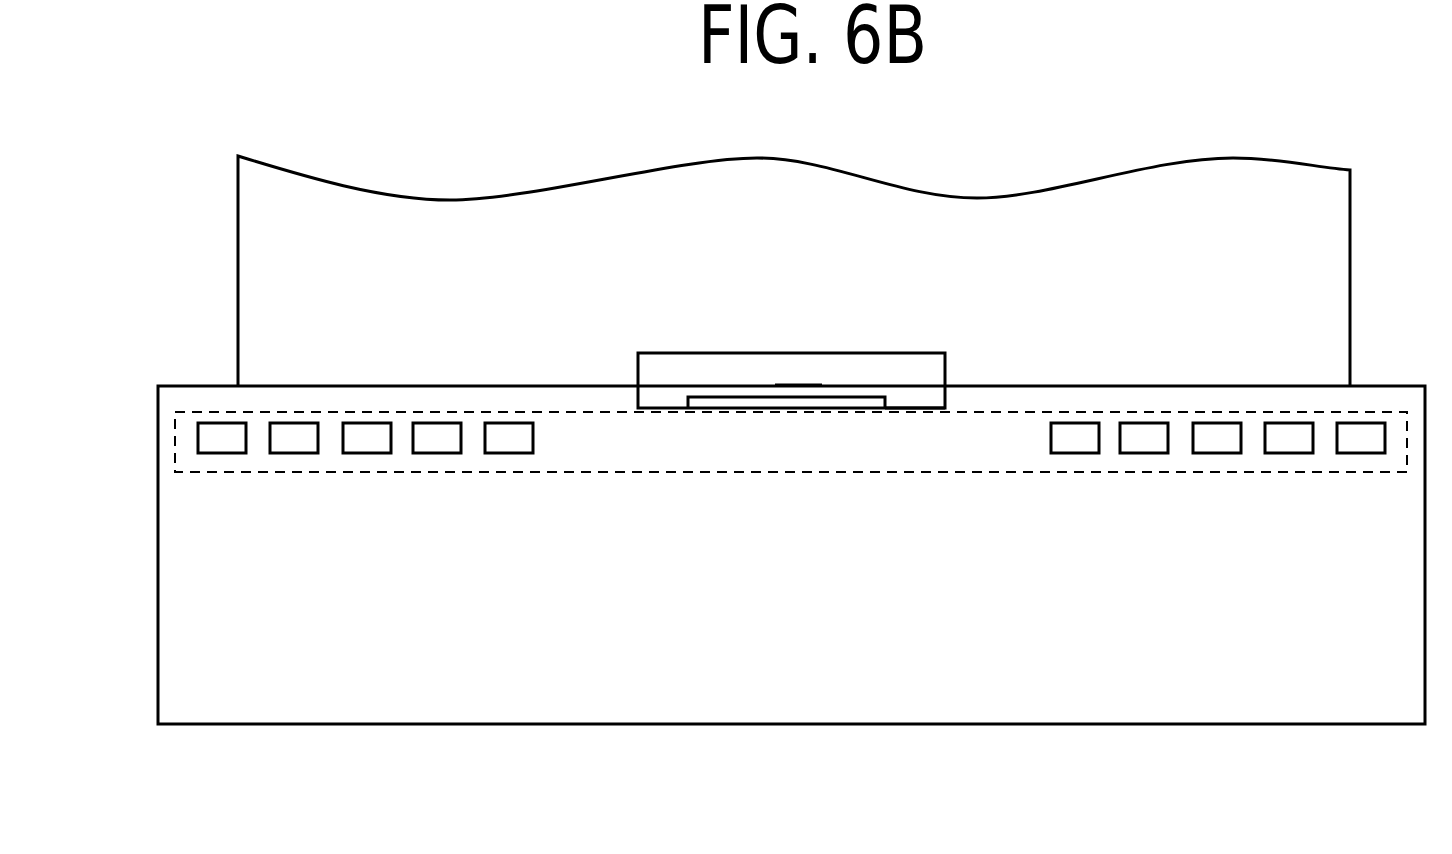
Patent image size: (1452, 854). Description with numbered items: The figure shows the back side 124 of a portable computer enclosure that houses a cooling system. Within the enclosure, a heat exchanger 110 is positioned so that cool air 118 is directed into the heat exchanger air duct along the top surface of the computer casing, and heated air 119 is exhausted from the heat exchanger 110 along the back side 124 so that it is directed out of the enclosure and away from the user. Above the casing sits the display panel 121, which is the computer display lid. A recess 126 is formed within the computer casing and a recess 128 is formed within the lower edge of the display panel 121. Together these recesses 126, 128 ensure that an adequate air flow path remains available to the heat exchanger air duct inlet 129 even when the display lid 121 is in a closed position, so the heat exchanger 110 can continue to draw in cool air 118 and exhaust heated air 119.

The display panel 121 is at (820, 240).
The back side 124 is at (808, 643).
The heat exchanger 110 is at (640, 453).
The heated air 119 is at (788, 498).
The recess 128 is at (660, 360).
The heat exchanger air duct inlet 129 is at (795, 402).
The recess 126 is at (915, 395).
The cool air 118 is at (905, 330).